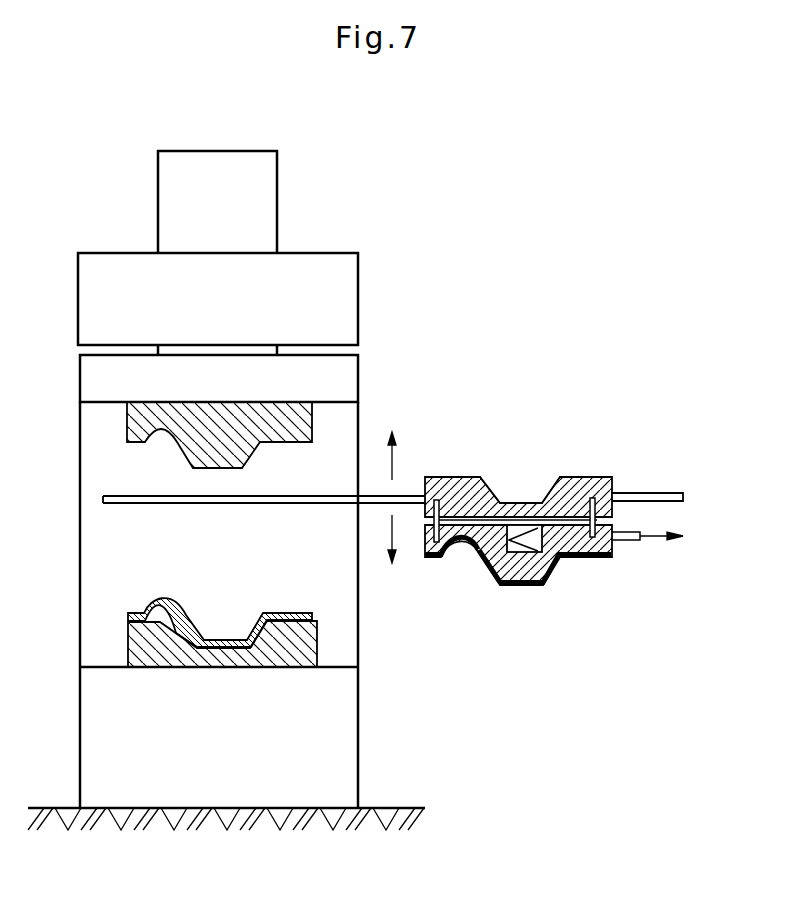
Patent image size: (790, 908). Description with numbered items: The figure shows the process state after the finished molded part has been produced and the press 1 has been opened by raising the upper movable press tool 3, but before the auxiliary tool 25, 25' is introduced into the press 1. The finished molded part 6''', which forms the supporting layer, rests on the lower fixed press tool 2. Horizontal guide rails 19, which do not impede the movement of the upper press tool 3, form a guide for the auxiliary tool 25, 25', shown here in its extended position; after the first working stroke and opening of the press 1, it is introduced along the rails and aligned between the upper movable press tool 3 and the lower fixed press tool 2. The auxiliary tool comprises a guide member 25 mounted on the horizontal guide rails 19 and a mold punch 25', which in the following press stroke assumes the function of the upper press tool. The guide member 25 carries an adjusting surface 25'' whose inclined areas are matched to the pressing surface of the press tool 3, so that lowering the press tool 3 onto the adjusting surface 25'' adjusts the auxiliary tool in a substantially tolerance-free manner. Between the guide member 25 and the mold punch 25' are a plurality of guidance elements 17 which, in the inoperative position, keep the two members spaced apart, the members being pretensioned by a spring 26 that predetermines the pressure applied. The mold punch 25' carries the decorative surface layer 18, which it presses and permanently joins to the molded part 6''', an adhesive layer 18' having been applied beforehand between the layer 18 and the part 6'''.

The press 1 is at (333, 375).
The lower fixed press tool 2 is at (140, 647).
The upper movable press tool 3 is at (138, 420).
The molded part 6''' is at (215, 606).
The guidance elements 17 is at (604, 488).
The decorative surface layer 18 is at (518, 584).
The adhesive layer 18' is at (519, 591).
The horizontal guide rails 19 is at (106, 500).
The guide member 25 is at (518, 475).
The mold punch 25' is at (554, 562).
The adjusting surface 25'' is at (520, 465).
The spring 26 is at (525, 530).